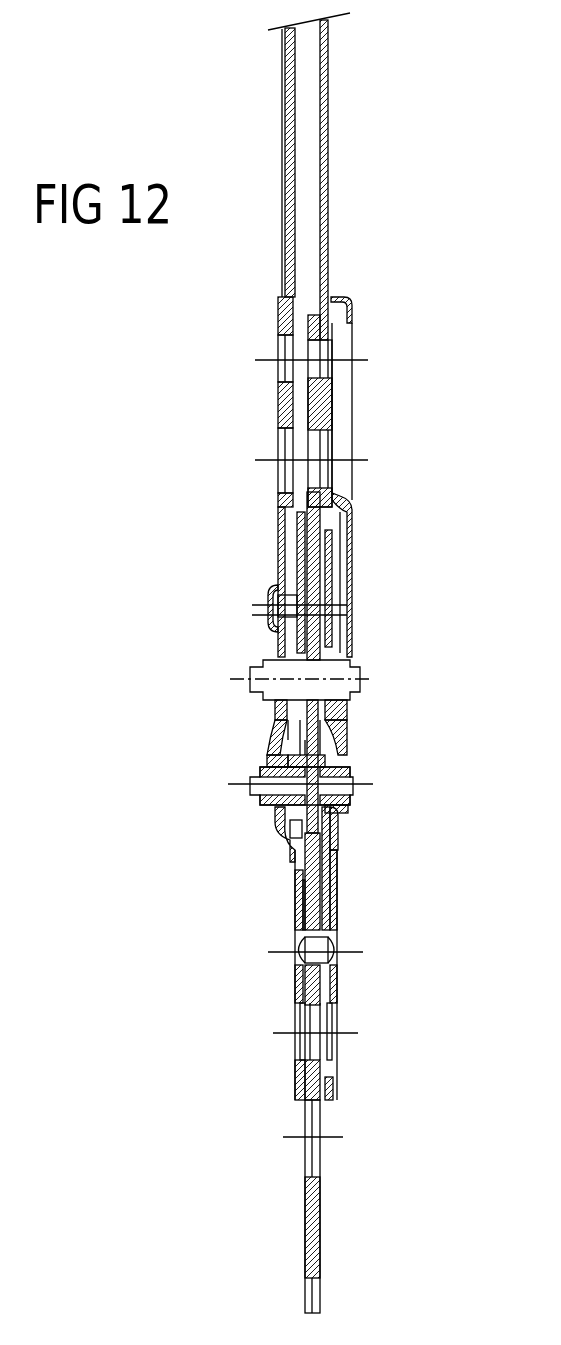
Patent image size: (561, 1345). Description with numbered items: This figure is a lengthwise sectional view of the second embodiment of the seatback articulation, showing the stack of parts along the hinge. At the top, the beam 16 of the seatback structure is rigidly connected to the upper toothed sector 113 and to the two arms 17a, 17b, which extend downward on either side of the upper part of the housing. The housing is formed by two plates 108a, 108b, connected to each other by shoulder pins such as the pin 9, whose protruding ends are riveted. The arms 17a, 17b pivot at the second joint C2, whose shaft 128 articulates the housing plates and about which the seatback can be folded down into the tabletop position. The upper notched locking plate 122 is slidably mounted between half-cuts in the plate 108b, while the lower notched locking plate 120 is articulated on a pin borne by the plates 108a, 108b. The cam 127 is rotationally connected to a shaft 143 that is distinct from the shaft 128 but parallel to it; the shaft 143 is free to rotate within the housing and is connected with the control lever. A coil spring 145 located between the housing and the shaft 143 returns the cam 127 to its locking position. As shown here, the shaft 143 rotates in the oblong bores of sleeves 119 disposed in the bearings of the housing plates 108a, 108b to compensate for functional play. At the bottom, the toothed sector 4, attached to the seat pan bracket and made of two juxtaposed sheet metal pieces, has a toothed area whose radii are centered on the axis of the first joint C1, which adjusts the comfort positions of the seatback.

The beam 16 is at (325, 170).
The upper toothed sector 113 is at (312, 412).
The arm 17a is at (347, 523).
The arm 17b is at (278, 513).
The upper notched locking plate 122 is at (312, 560).
The shaft of joint C2 128 is at (265, 672).
The second joint C2 is at (377, 678).
The cam 127 is at (315, 740).
The sleeve 119 is at (268, 762).
The shaft 143 is at (355, 782).
The coil spring 145 is at (270, 830).
The lower notched locking plate 120 is at (320, 855).
The housing plate 108a is at (337, 912).
The housing plate 108b is at (297, 910).
The shoulder pin 9 is at (320, 950).
The first joint C1 is at (295, 1037).
The toothed sector 4 is at (302, 1228).